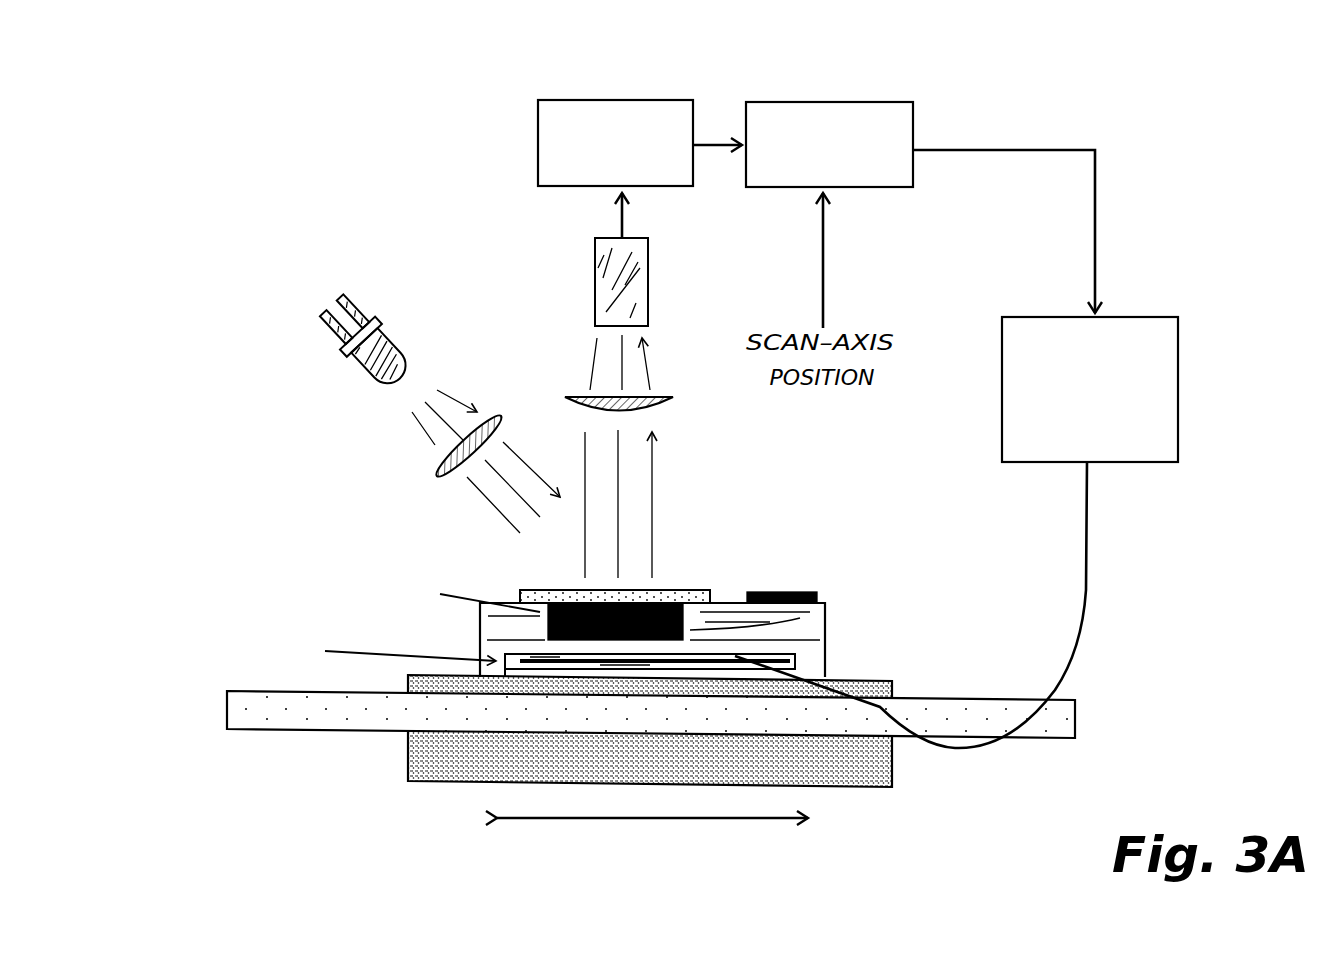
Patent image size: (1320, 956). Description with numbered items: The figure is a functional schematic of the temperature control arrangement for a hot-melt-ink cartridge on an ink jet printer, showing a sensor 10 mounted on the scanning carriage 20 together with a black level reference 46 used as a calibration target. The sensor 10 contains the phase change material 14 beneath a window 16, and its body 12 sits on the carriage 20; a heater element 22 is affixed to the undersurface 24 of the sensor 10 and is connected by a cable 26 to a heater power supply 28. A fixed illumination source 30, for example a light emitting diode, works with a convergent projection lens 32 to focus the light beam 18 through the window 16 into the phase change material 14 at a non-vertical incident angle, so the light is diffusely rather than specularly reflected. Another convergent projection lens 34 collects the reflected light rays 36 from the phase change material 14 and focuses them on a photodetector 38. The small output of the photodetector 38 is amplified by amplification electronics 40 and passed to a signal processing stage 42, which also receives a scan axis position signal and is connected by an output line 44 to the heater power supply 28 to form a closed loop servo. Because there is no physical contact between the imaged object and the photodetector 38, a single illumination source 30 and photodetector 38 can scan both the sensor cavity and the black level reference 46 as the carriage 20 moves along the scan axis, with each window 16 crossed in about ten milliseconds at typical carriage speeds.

The sensor 10 is at (826, 620).
The substrate 12 is at (807, 628).
The phase change material 14 is at (670, 602).
The window 16 is at (546, 591).
The light beam 18 is at (492, 504).
The scanning carriage 20 is at (408, 775).
The heater element 22 is at (710, 669).
The undersurface 24 is at (797, 660).
The cable 26 is at (1086, 590).
The heater power supply 28 is at (1175, 317).
The illumination source 30 is at (410, 350).
The convergent projection lens 32 is at (497, 418).
The convergent projection lens 34 is at (668, 398).
The reflected light rays 36 is at (653, 476).
The photodetector 38 is at (650, 266).
The amplification electronics 40 is at (683, 100).
The signal processing stage 42 is at (905, 102).
The output line 44 is at (1095, 150).
The black level reference 46 is at (790, 592).